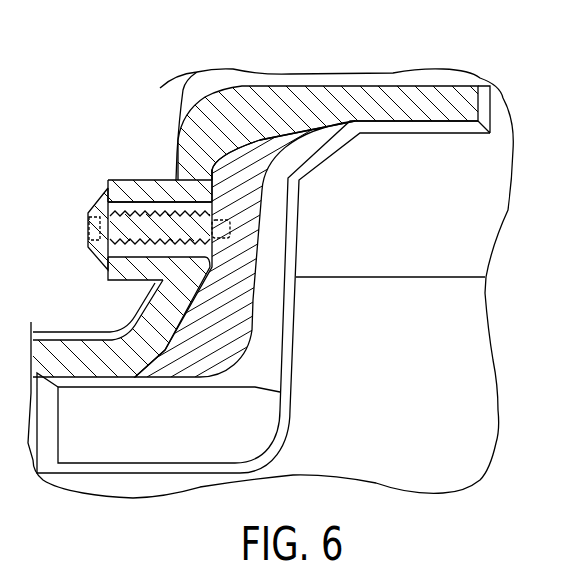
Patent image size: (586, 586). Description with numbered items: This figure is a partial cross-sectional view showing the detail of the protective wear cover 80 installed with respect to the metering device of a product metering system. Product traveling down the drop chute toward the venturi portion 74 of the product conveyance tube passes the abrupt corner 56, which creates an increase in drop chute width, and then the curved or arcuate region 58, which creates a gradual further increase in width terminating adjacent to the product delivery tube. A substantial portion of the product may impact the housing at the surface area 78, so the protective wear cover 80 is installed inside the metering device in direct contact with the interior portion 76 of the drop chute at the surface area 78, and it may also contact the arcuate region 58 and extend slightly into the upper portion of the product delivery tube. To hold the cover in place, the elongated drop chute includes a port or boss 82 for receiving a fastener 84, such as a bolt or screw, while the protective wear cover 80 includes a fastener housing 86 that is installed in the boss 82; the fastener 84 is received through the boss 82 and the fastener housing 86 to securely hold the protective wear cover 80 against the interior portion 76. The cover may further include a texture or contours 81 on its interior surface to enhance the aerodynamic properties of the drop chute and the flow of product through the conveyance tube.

The venturi portion 74 is at (421, 466).
The interior portion 76 is at (392, 247).
The curved or arcuate region 58 is at (216, 117).
The abrupt corner 56 is at (456, 92).
The protective wear cover 80 is at (265, 222).
The texture or contours 81 is at (233, 407).
The surface area 78 is at (167, 317).
The port or boss 82 is at (157, 200).
The fastener 84 is at (113, 231).
The fastener housing 86 is at (157, 200).